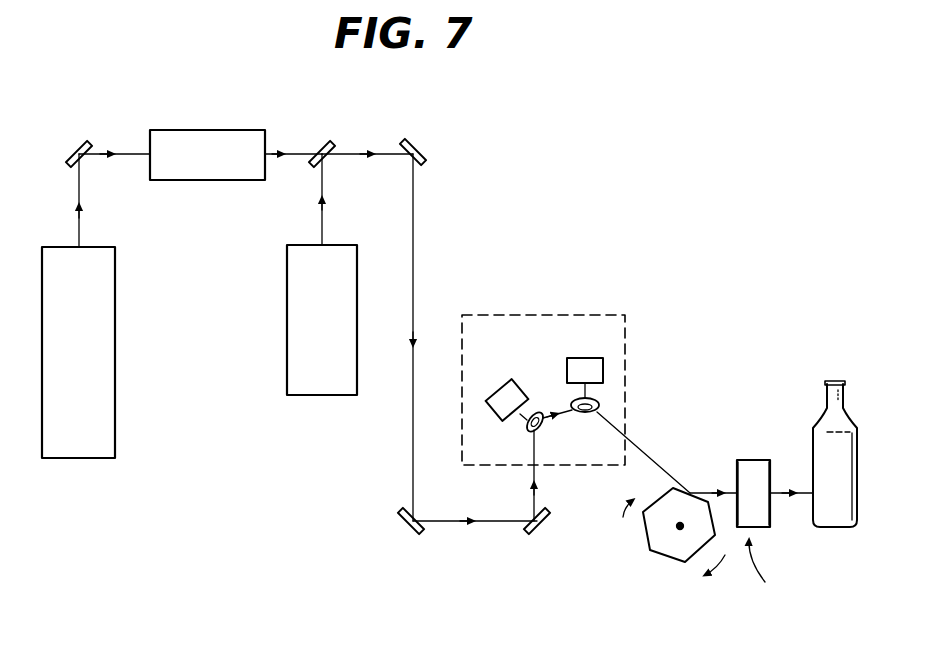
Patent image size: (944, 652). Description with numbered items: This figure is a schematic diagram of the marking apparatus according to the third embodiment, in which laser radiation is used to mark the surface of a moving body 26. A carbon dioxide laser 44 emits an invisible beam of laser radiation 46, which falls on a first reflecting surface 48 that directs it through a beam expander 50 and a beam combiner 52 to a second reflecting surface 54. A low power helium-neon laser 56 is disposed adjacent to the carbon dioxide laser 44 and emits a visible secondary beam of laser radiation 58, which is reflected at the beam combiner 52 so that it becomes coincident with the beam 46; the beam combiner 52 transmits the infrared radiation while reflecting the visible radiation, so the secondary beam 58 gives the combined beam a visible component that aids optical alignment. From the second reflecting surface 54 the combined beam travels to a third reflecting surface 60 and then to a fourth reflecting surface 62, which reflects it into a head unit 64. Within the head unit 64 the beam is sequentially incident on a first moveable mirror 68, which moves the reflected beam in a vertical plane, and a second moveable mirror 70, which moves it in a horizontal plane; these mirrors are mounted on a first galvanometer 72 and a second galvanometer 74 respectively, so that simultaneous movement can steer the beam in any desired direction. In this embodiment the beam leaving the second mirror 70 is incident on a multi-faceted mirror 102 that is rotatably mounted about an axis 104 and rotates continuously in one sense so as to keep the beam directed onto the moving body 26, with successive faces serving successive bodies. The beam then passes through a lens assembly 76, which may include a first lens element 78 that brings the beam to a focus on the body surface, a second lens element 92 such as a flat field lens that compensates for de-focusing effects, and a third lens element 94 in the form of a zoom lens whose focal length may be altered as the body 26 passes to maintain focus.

The moving body 26 is at (833, 527).
The carbon dioxide laser 44 is at (115, 362).
The beam of laser radiation 46 is at (79, 227).
The first reflecting surface 48 is at (72, 148).
The beam expander 50 is at (203, 130).
The beam combiner 52 is at (318, 147).
The second reflecting surface 54 is at (424, 142).
The helium-neon laser 56 is at (290, 330).
The secondary beam of visible laser radiation 58 is at (323, 213).
The third reflecting surface 60 is at (402, 530).
The fourth reflecting surface 62 is at (540, 529).
The head unit 64 is at (599, 472).
The first moveable mirror 68 is at (527, 428).
The second moveable mirror 70 is at (580, 418).
The first galvanometer 72 is at (496, 386).
The second galvanometer 74 is at (576, 358).
The lens assembly 76 is at (766, 575).
The first lens element 78 is at (737, 460).
The second lens element 92 is at (750, 458).
The third lens element 94 is at (771, 460).
The multi-faceted mirror 102 is at (645, 540).
The axis 104 is at (680, 530).